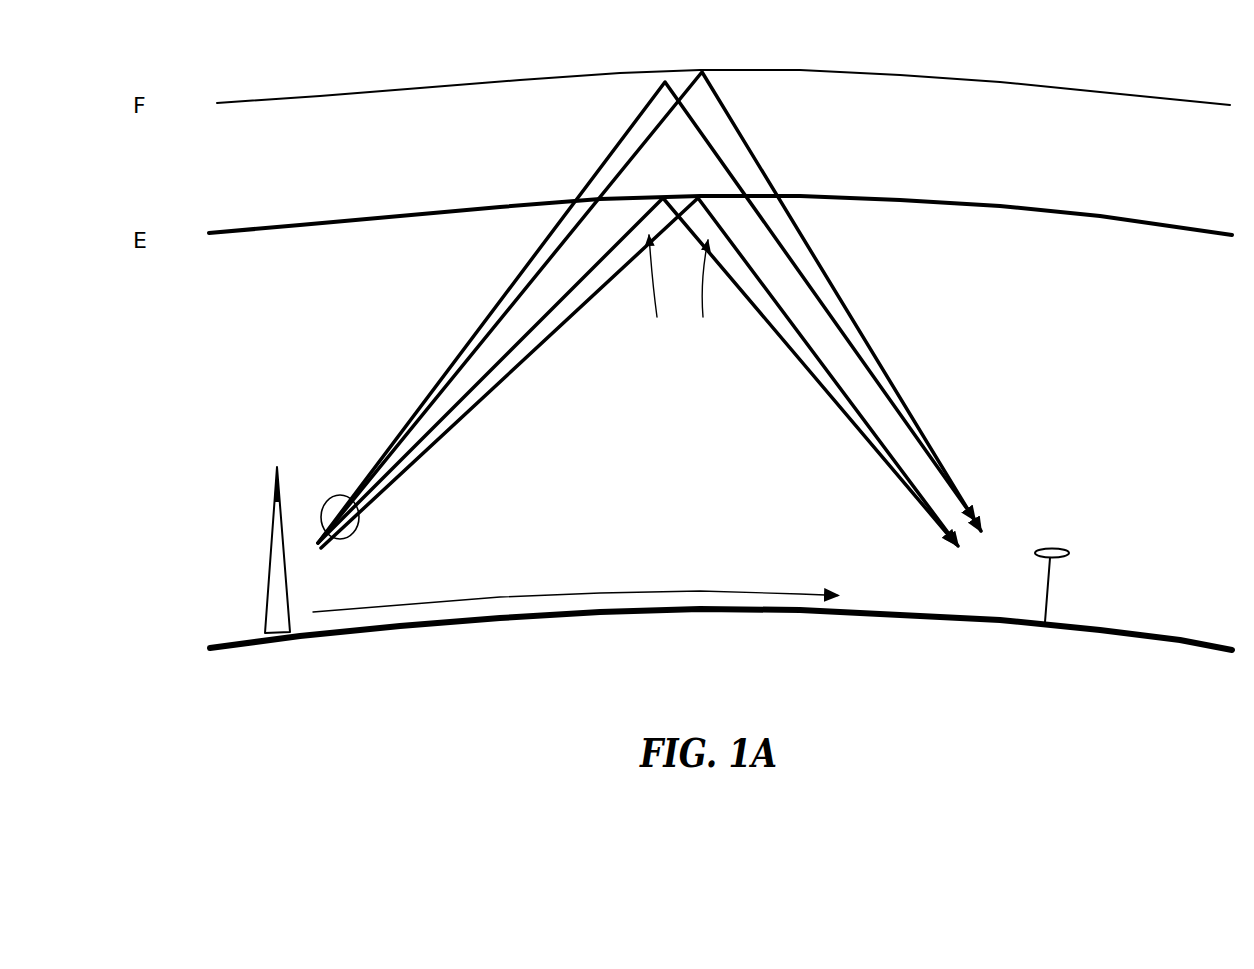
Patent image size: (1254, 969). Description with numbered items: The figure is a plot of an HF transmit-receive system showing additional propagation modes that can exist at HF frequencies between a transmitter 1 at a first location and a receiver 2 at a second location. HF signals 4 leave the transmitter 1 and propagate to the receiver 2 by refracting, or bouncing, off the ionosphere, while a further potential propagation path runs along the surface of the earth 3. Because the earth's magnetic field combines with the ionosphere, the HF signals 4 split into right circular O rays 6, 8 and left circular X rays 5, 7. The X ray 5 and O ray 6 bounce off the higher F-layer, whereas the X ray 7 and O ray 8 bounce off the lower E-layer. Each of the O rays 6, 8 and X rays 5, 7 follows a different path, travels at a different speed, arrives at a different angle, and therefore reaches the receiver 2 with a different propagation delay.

The transmitter 1 is at (167, 473).
The receiver 2 is at (1102, 523).
The surface of the earth 3 is at (648, 590).
The HF signals 4 is at (338, 495).
The X ray (1F X) 5 is at (673, 78).
The O ray (1F O) 6 is at (717, 88).
The X ray (1E X) 7 is at (645, 215).
The O ray (1E O) 8 is at (716, 218).